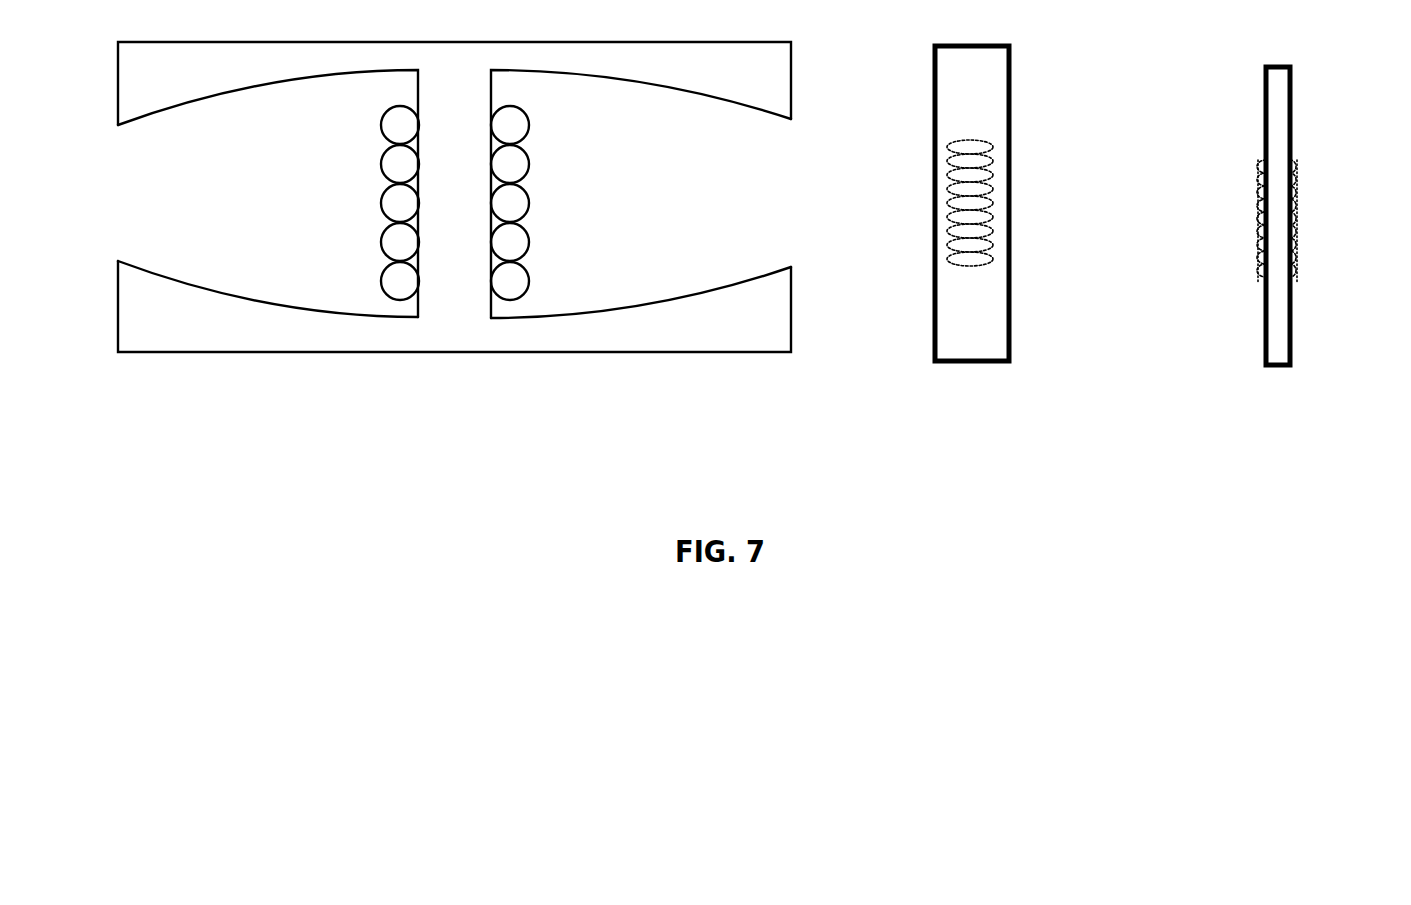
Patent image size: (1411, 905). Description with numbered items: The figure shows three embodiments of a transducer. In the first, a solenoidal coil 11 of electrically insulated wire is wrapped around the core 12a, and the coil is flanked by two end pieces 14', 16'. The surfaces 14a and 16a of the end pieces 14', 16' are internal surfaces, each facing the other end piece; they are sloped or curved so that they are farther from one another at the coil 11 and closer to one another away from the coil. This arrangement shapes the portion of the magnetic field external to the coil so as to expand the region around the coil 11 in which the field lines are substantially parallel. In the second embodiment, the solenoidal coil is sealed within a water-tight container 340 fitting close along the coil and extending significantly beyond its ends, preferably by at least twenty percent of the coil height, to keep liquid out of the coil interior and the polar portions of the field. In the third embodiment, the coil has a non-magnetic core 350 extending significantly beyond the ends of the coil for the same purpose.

The solenoidal coil 11 is at (400, 300).
The core 12a is at (437, 58).
The end piece 14' is at (454, 160).
The internal surface 14a is at (172, 110).
The end piece 16' is at (454, 335).
The internal surface 16a is at (225, 295).
The water-tight container 340 is at (1012, 304).
The non-magnetic core 350 is at (1290, 335).